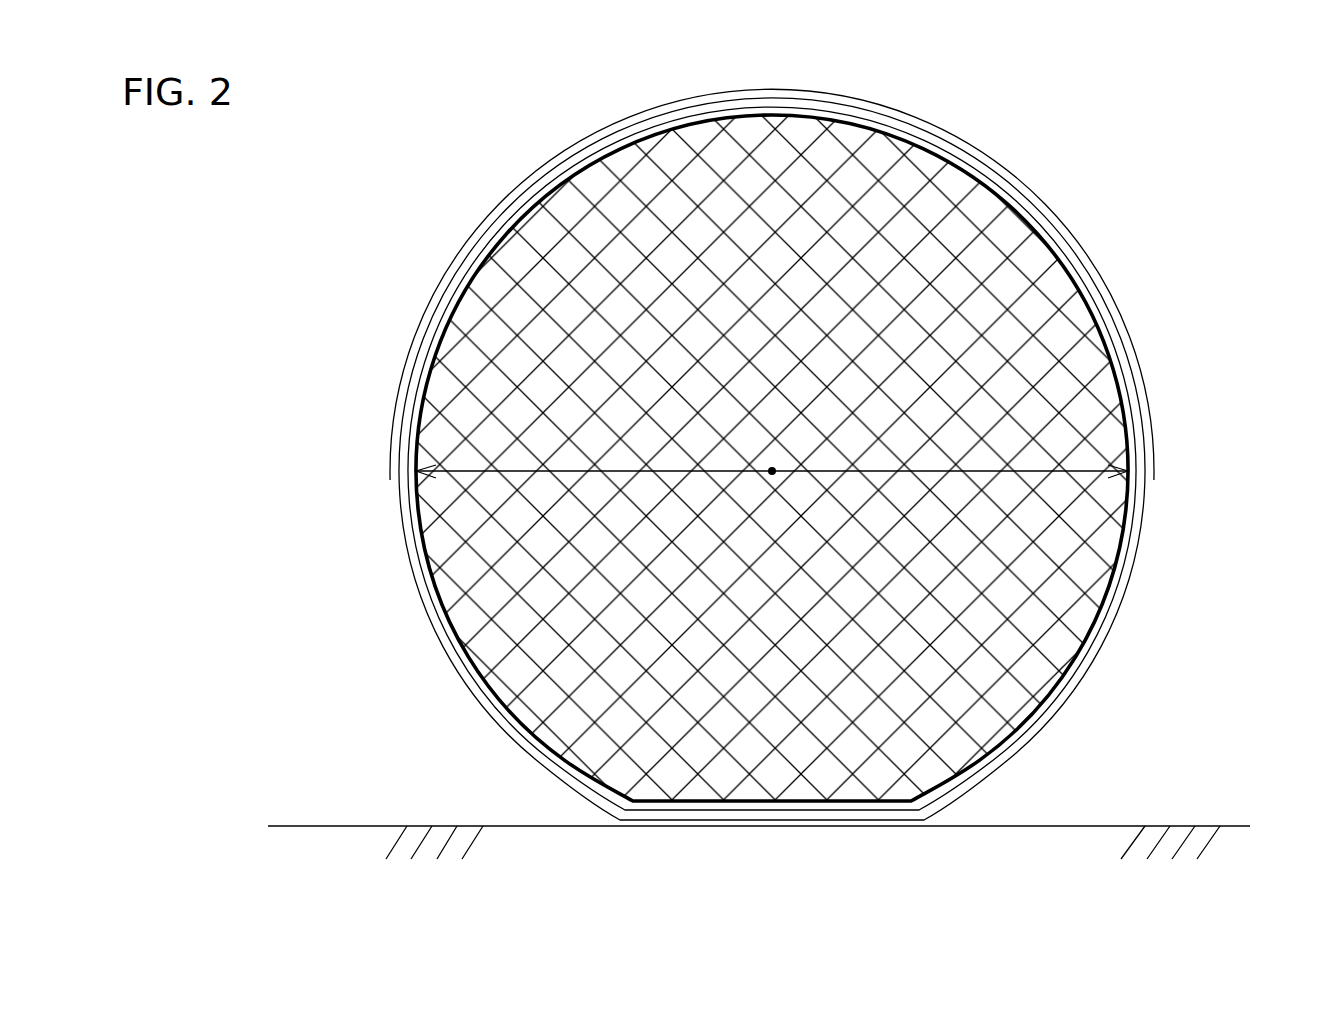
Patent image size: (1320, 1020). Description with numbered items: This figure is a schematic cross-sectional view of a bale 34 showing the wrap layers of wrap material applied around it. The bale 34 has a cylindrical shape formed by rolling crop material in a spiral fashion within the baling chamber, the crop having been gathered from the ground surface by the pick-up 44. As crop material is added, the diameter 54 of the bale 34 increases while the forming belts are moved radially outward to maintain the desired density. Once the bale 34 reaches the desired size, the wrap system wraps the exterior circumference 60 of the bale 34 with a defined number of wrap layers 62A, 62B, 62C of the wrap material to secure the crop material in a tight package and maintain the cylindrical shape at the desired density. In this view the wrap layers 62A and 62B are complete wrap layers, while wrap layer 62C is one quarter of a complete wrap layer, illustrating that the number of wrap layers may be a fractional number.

The bale 34 is at (1030, 68).
The pick-up 44 is at (1236, 825).
The diameter 54 is at (725, 471).
The circumference 60 is at (1083, 258).
The first wrap layer 62A is at (478, 228).
The second wrap layer 62B is at (437, 288).
The third wrap layer 62C is at (405, 350).